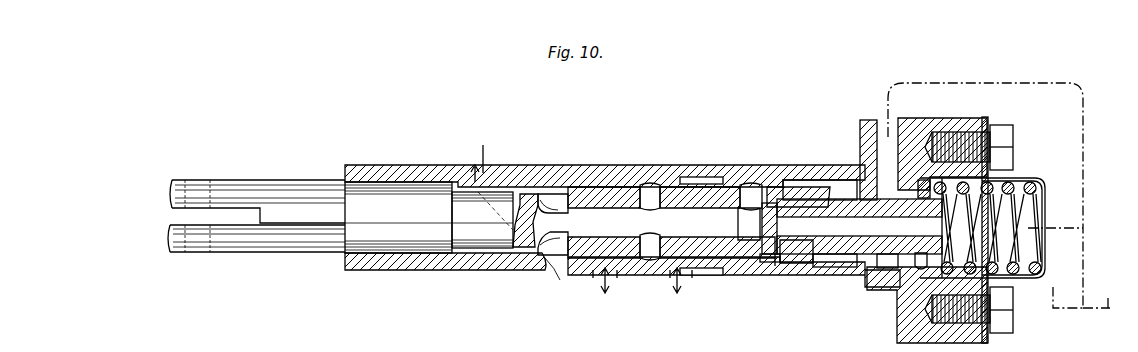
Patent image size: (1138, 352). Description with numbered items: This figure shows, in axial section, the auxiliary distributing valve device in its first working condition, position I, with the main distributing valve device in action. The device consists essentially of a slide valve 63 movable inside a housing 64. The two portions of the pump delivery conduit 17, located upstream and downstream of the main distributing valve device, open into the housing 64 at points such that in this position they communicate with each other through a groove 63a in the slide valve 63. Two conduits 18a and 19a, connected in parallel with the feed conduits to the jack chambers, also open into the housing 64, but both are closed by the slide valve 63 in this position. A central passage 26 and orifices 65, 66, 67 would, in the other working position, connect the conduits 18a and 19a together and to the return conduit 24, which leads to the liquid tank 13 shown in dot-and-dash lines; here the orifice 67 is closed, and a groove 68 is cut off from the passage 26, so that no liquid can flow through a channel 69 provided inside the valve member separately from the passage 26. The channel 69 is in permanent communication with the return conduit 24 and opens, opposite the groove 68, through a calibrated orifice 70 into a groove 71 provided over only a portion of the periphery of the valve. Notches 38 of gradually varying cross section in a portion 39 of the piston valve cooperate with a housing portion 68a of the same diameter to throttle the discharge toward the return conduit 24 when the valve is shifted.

The liquid tank 13 is at (1090, 308).
The pump delivery conduit 17 is at (560, 282).
The conduit 18a is at (603, 273).
The conduit 19a is at (670, 273).
The return conduit 24 is at (883, 143).
The central passage 26 is at (605, 207).
The notches 38 is at (800, 187).
The portion of piston valve 39 is at (797, 267).
The slide valve 63 is at (411, 198).
The groove 63a is at (487, 250).
The housing 64 is at (530, 190).
The orifice 65 is at (557, 200).
The orifice 66 is at (650, 192).
The orifice 67 is at (750, 190).
The groove 68 is at (835, 267).
The housing portion 68a is at (872, 257).
The channel 69 is at (903, 230).
The calibrated orifice 70 is at (782, 266).
The groove 71 is at (770, 264).